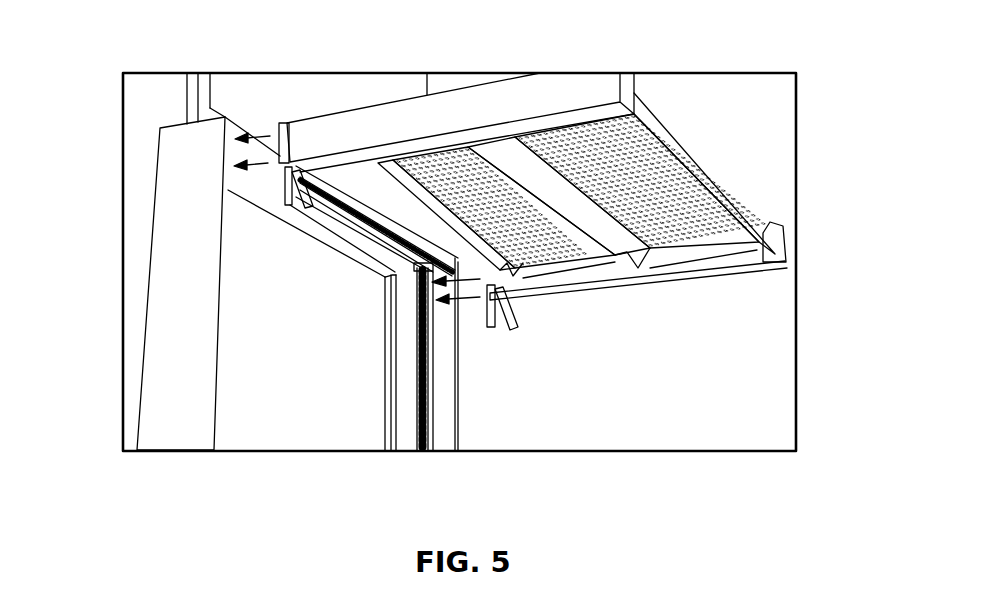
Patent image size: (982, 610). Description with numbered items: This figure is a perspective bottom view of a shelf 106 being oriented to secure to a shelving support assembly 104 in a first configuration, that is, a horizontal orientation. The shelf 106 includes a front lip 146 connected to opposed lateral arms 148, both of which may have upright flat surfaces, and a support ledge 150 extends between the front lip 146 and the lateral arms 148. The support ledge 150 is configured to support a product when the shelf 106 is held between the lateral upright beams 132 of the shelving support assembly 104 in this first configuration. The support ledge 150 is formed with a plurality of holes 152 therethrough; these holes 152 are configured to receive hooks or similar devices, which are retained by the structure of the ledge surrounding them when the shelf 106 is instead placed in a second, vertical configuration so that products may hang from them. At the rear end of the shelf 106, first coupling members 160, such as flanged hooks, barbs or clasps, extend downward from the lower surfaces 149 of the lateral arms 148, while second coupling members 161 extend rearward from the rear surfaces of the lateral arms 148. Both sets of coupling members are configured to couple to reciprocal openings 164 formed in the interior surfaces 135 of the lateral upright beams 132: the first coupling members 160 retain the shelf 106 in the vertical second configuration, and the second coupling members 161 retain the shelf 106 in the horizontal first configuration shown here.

The shelving support assembly 104 is at (180, 263).
The shelf 106 is at (745, 192).
The lateral upright beams 132 is at (170, 336).
The interior surfaces 135 is at (437, 373).
The front lip 146 is at (667, 143).
The lateral arms 148 is at (578, 92).
The lower surfaces 149 is at (292, 182).
The support ledge 150 is at (663, 173).
The holes 152 is at (687, 215).
The first coupling members 160 is at (292, 184).
The second coupling members 161 is at (283, 128).
The reciprocal openings 164 is at (417, 388).